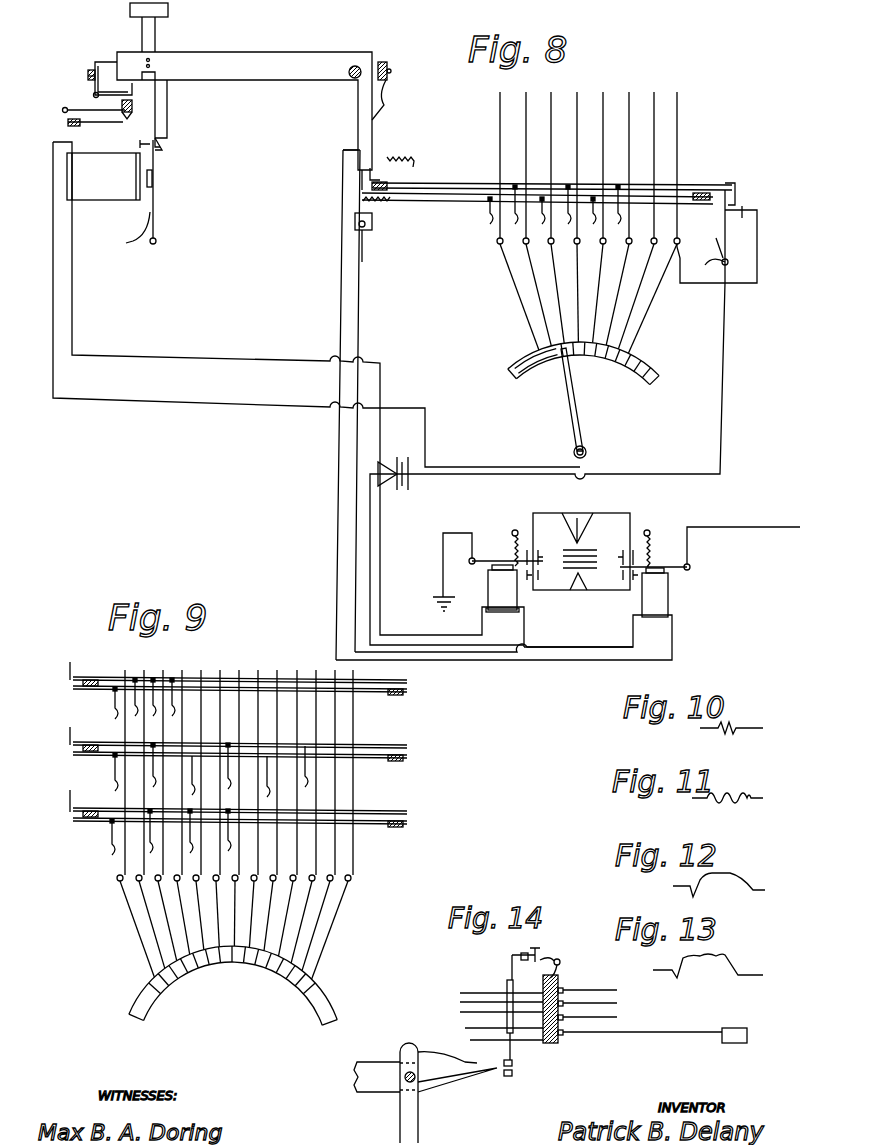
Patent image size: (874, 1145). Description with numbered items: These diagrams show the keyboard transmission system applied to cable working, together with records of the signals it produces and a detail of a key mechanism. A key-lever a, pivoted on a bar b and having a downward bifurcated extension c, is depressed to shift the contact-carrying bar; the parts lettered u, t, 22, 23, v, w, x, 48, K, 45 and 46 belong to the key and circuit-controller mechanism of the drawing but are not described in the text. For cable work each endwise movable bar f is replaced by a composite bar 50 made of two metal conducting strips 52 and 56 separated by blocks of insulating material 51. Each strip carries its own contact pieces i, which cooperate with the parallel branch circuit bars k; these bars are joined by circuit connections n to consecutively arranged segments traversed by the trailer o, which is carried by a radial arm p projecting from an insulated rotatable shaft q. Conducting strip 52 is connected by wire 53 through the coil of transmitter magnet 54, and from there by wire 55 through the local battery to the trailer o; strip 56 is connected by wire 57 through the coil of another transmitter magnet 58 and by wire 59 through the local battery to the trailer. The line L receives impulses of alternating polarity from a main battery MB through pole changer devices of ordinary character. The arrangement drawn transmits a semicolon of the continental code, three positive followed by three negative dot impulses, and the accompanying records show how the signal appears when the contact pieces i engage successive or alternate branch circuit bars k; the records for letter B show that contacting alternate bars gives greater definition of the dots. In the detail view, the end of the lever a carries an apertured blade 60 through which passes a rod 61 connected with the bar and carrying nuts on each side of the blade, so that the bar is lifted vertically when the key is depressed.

In FIG. 8, the key-lever a is at (238, 60).
In FIG. 14, the key-lever a is at (440, 1078).
In FIG. 8, the bar b is at (357, 66).
In FIG. 8, the downward bifurcated extension c is at (372, 135).
In FIG. 8, the bracket u is at (117, 62).
In FIG. 8, the stop t is at (88, 86).
In FIG. 8, the contact block 22 is at (138, 108).
In FIG. 8, the contact spring 23 is at (101, 125).
In FIG. 8, the depending arm v is at (170, 108).
In FIG. 8, the armature lever w is at (157, 196).
In FIG. 8, the electromagnet x is at (109, 176).
In FIG. 8, the conductor 48 is at (70, 268).
In FIG. 8, the wire 57 is at (362, 300).
In FIG. 8, the composite bar 50 is at (358, 193).
In FIG. 9, the composite bar 50 is at (68, 685).
In FIG. 8, the blocks of insulating material 51 is at (712, 172).
In FIG. 8, the conducting strip 52 is at (430, 183).
In FIG. 8, the conducting strip 56 is at (537, 207).
In FIG. 8, the contact pieces i is at (487, 212).
In FIG. 9, the contact pieces i is at (120, 702).
In FIG. 14, the contact pieces i is at (498, 1013).
In FIG. 8, the branch circuit contact plates k is at (520, 110).
In FIG. 9, the branch circuit contact plates k is at (255, 668).
In FIG. 14, the branch circuit contact plates k is at (500, 985).
In FIG. 9, the contact segment ring K is at (355, 798).
In FIG. 8, the switch 45 is at (745, 213).
In FIG. 14, the switch 45 is at (542, 953).
In FIG. 14, the switch contact 46 is at (562, 962).
In FIG. 8, the trailer o is at (548, 362).
In FIG. 8, the radial arm p is at (579, 404).
In FIG. 8, the rotatable shaft q is at (588, 452).
In FIG. 8, the wire 55 is at (378, 545).
In FIG. 8, the wire 53 is at (336, 528).
In FIG. 8, the main battery MB is at (578, 540).
In FIG. 8, the transmitter magnet 54 is at (488, 571).
In FIG. 8, the transmitter magnet 58 is at (655, 573).
In FIG. 8, the line L is at (743, 534).
In FIG. 8, the wire 59 is at (575, 650).
In FIG. 14, the endwise movable bar f is at (478, 993).
In FIG. 14, the circuit connections n is at (640, 1036).
In FIG. 14, the rod 61 is at (514, 1063).
In FIG. 14, the apertured blade 60 is at (507, 1078).